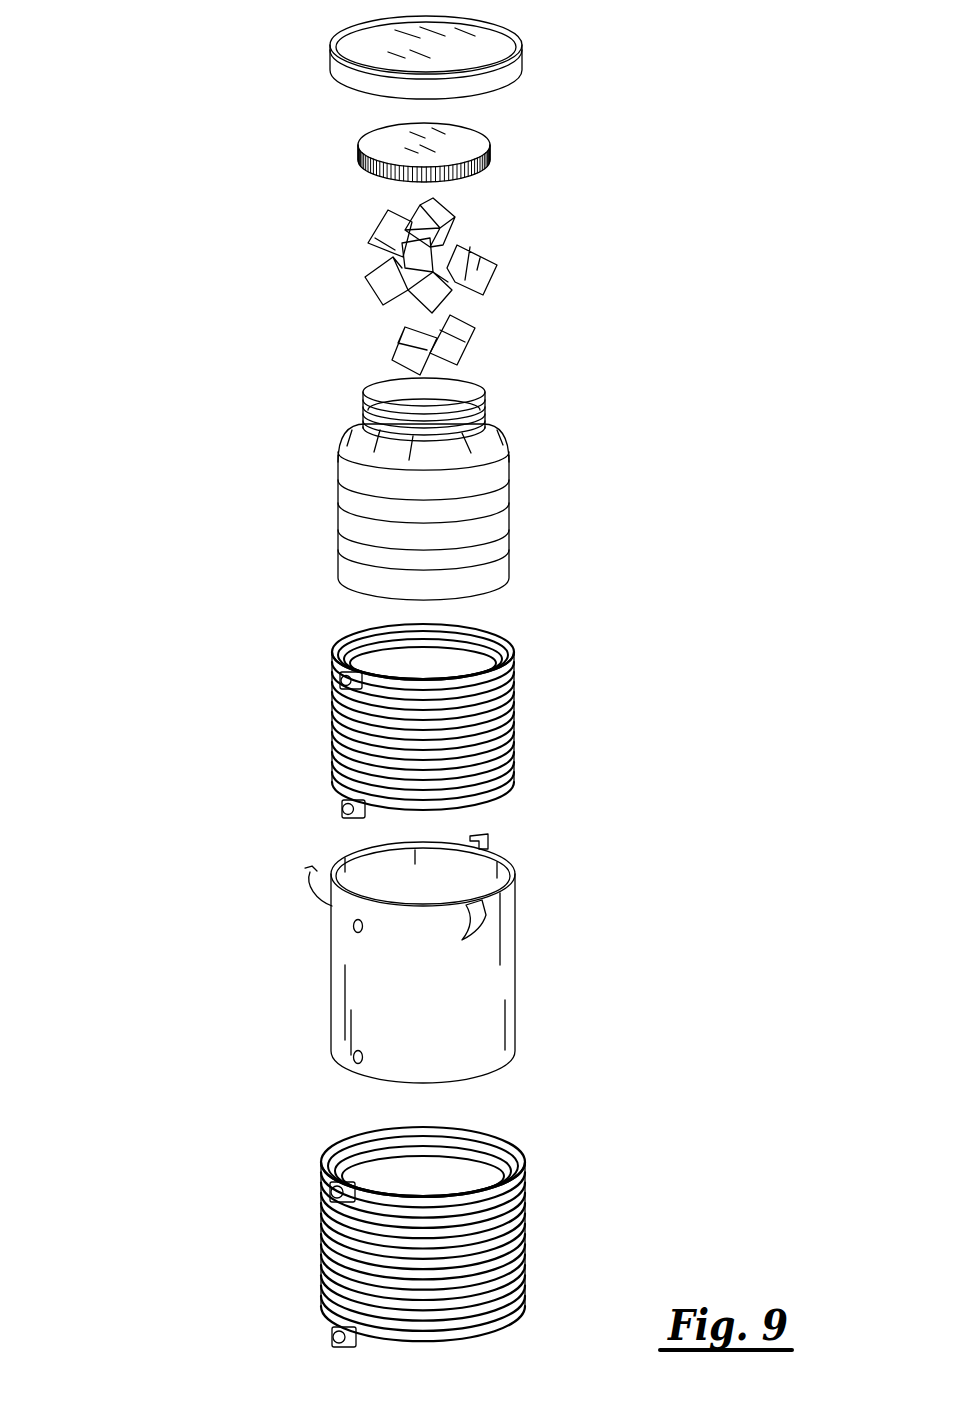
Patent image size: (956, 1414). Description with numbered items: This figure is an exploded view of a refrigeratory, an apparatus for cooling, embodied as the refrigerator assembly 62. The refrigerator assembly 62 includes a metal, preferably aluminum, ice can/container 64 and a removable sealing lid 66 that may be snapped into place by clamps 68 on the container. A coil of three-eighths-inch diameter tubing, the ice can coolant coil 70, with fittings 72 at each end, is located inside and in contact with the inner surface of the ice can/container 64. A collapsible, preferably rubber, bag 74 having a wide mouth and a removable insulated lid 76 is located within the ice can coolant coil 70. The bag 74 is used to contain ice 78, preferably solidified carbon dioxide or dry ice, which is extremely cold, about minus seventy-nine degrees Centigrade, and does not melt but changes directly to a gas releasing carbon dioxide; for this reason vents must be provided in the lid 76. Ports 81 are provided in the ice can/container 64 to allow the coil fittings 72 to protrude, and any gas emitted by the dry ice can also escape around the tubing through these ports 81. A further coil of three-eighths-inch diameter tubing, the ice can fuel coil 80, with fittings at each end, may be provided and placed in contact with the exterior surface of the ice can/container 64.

The refrigerator assembly 62 is at (204, 432).
The ice can/container 64 is at (500, 1018).
The removable sealing lid 66 is at (340, 61).
The clamps 68 is at (480, 838).
The ice can coolant coil 70 is at (500, 737).
The fittings 72 is at (340, 680).
The bag 74 is at (492, 498).
The removable insulated lid 76 is at (380, 152).
The ice 78 is at (482, 264).
The ice can fuel coil 80 is at (510, 1232).
The ports 81 is at (352, 929).